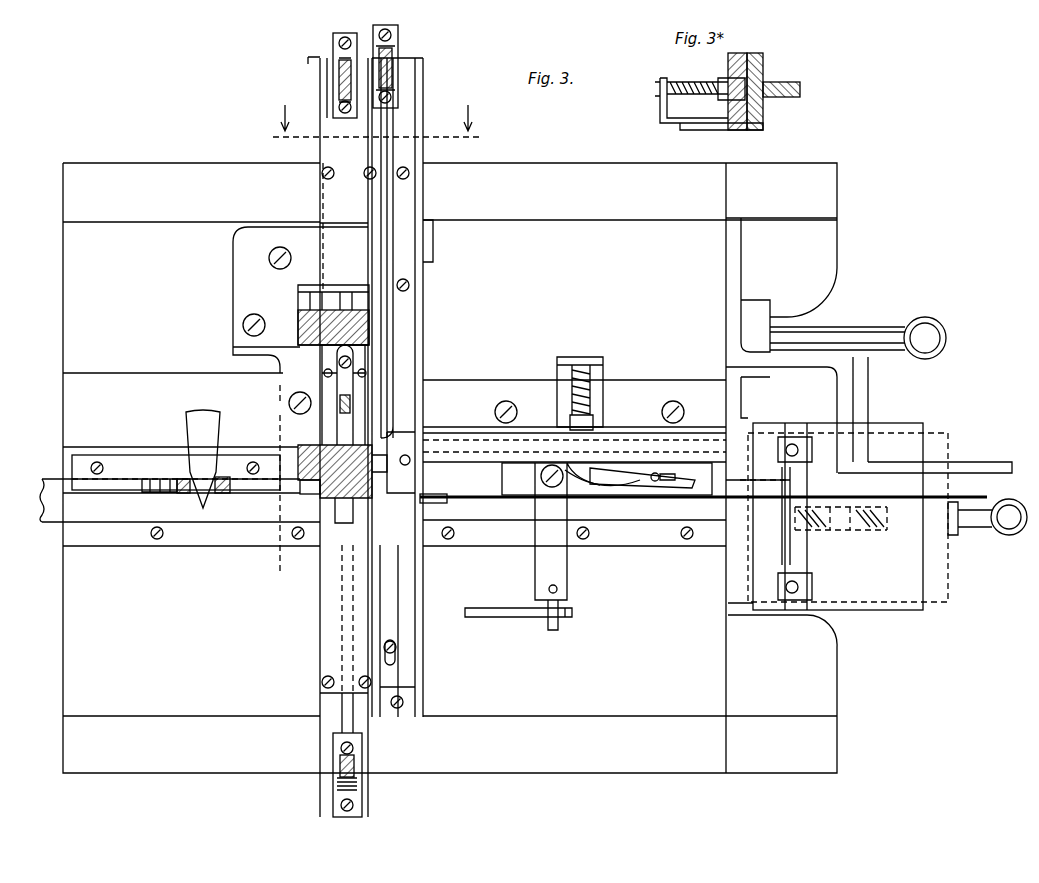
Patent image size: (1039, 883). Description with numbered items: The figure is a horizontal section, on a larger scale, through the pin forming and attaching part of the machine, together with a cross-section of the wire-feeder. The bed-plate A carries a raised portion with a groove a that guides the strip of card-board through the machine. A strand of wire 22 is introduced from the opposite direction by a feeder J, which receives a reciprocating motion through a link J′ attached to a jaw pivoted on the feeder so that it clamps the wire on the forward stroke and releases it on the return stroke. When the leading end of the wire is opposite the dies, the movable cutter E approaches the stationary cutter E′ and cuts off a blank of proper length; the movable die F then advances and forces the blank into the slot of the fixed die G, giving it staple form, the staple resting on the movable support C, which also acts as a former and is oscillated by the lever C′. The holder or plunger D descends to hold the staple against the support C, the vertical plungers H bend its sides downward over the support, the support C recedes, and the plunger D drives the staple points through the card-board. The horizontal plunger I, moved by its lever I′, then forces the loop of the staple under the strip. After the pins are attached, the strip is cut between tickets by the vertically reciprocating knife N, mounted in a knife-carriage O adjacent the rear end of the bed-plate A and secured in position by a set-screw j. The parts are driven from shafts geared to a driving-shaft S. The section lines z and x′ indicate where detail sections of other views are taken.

In FIG. 3, the bed-plate A is at (438, 468).
In FIG. 3, the movable die F is at (345, 727).
In FIG. 3, the clamp block F′ is at (362, 760).
In FIG. 3, the horizontal plunger I is at (335, 52).
In FIG. 3, the lever I′ is at (340, 95).
In FIG. 3, the movable cutter E is at (405, 122).
In FIG. 3, the stationary cutter E′ is at (397, 631).
In FIG. 3, the section line z is at (374, 126).
In FIG. 3, the section line x′ is at (278, 481).
In FIG. 3, the vertical plunger H is at (392, 492).
In FIG. 3, the fixed die G is at (325, 498).
In FIG. 3, the holder or plunger D is at (366, 476).
In FIG. 3, the driving-shaft S is at (310, 489).
In FIG. 3, the movable support C is at (183, 493).
In FIG. 3, the lever C′ is at (203, 459).
In FIG. 3, the strand of wire 22 is at (488, 502).
In FIG. 3, the groove a is at (474, 508).
In FIG. 3, the feeder J is at (648, 492).
The feeder J is at (764, 91).
In FIG. 3, the link J′ is at (530, 612).
In FIG. 3, the knife N is at (790, 525).
In FIG. 3, the knife-carriage O is at (800, 497).
In FIG. 3, the set-screw j is at (987, 524).